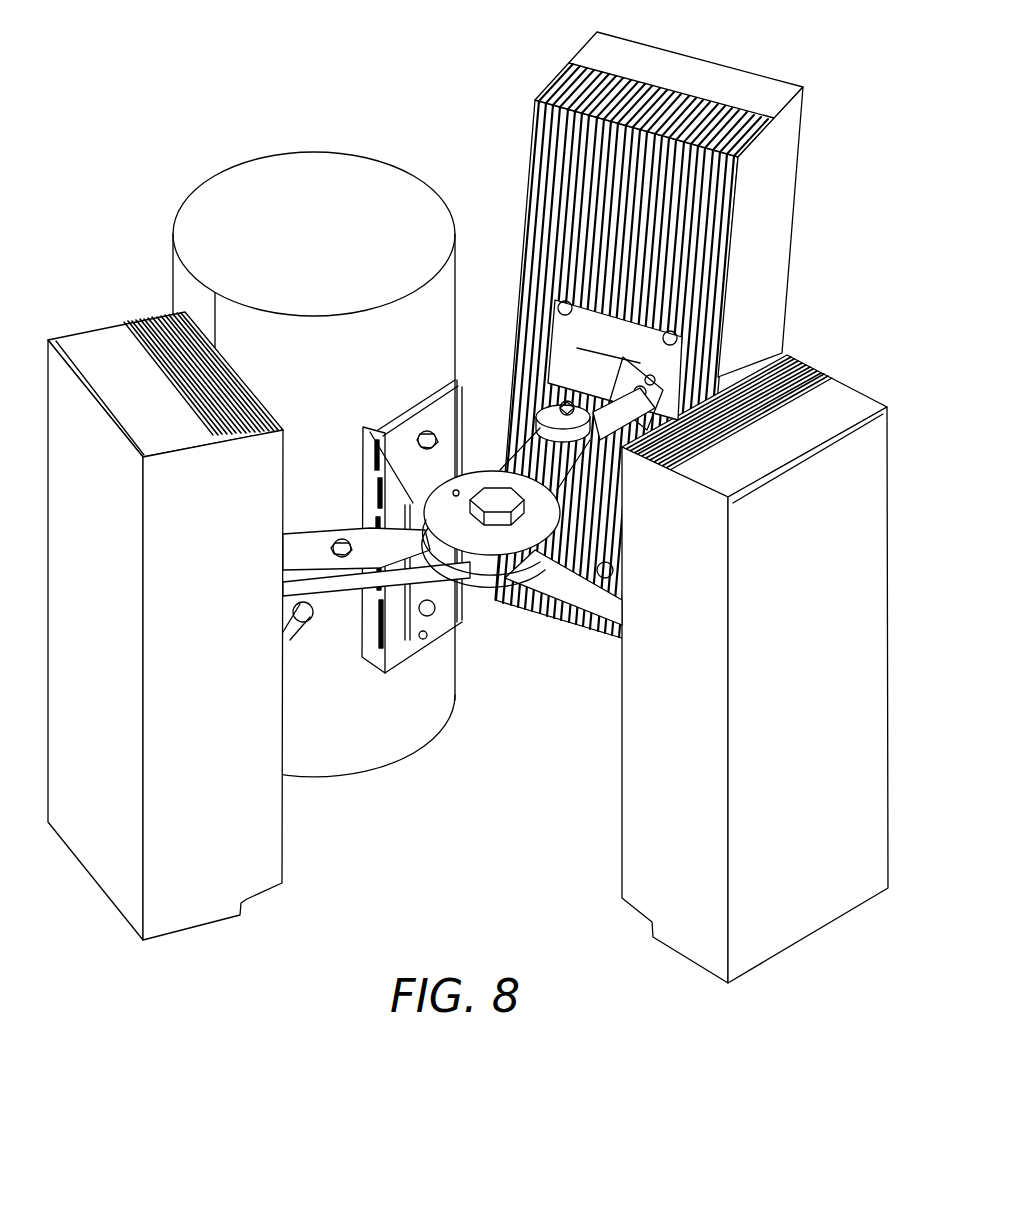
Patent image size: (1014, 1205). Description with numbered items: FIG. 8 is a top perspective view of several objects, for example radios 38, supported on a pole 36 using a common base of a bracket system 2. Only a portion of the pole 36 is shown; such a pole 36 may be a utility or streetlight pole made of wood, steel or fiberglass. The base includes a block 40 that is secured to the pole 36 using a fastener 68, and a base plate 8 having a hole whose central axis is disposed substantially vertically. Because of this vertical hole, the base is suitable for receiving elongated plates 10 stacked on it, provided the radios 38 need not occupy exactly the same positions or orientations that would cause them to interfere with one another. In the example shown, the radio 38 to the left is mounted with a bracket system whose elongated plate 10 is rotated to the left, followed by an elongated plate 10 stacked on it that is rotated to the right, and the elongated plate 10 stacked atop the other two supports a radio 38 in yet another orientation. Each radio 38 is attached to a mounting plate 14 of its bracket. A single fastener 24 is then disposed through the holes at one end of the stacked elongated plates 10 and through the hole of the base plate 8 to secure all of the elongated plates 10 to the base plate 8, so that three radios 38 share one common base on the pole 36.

The bracket system 2 is at (468, 507).
The base plate 8 is at (510, 600).
The elongated plate 10 is at (543, 440).
The mounting plate 14 is at (573, 300).
The fastener 24 is at (497, 498).
The pole 36 is at (175, 266).
The radio 38 is at (556, 82).
The block 40 is at (462, 372).
The fastener 68 is at (452, 372).